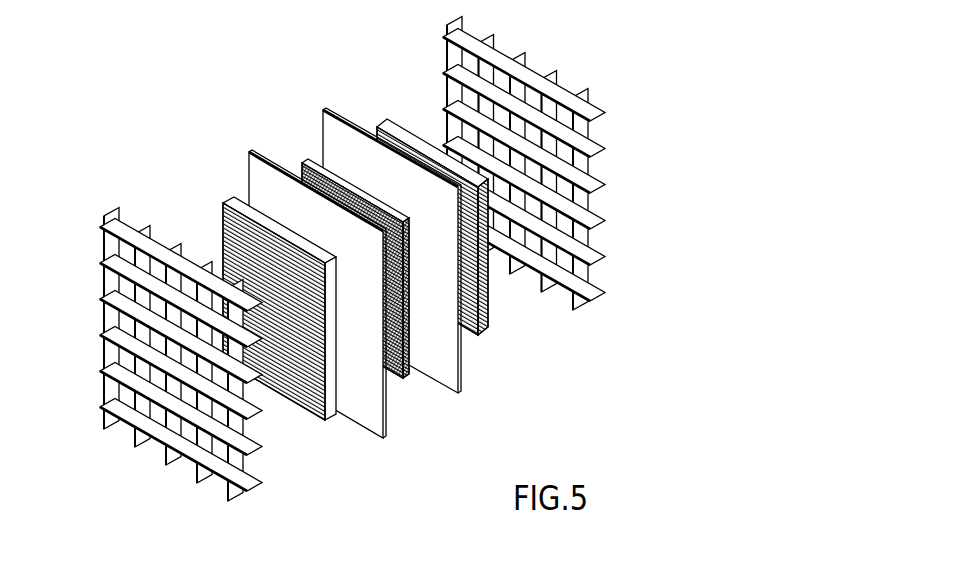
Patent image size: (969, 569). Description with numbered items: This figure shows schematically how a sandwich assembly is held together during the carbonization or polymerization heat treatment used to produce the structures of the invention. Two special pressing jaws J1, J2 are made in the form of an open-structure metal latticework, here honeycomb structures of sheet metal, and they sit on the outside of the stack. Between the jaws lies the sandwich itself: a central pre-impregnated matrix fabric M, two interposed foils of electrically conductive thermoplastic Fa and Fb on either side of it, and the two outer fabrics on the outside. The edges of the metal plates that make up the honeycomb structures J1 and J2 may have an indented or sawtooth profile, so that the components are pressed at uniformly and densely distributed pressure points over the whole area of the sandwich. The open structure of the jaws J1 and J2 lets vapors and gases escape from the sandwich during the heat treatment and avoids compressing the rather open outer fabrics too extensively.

The pressing jaw J1 is at (153, 340).
The pressing jaw J2 is at (525, 164).
The foil of electrically conductive thermoplastic Fa is at (284, 286).
The foil of electrically conductive thermoplastic Fb is at (371, 226).
The pre-impregnated matrix fabric M is at (331, 244).